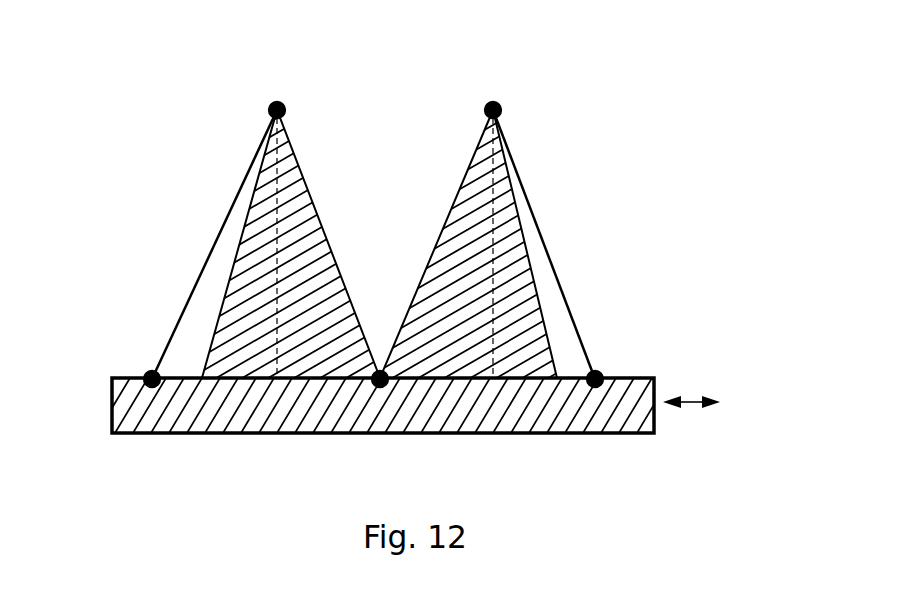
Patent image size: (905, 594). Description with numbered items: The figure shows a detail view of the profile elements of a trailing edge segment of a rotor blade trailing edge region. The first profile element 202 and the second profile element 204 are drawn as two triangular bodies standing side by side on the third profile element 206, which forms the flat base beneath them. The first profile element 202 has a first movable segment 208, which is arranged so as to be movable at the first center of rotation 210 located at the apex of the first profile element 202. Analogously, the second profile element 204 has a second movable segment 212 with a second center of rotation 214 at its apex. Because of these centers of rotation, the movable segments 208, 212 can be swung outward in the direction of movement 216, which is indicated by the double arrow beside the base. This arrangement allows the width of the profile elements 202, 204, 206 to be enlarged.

The first profile element 202 is at (232, 118).
The second profile element 204 is at (537, 138).
The third profile element 206 is at (374, 405).
The first movable segment 208 is at (233, 258).
The first center of rotation 210 is at (278, 102).
The second movable segment 212 is at (527, 218).
The second center of rotation 214 is at (493, 102).
The direction of movement 216 is at (695, 404).